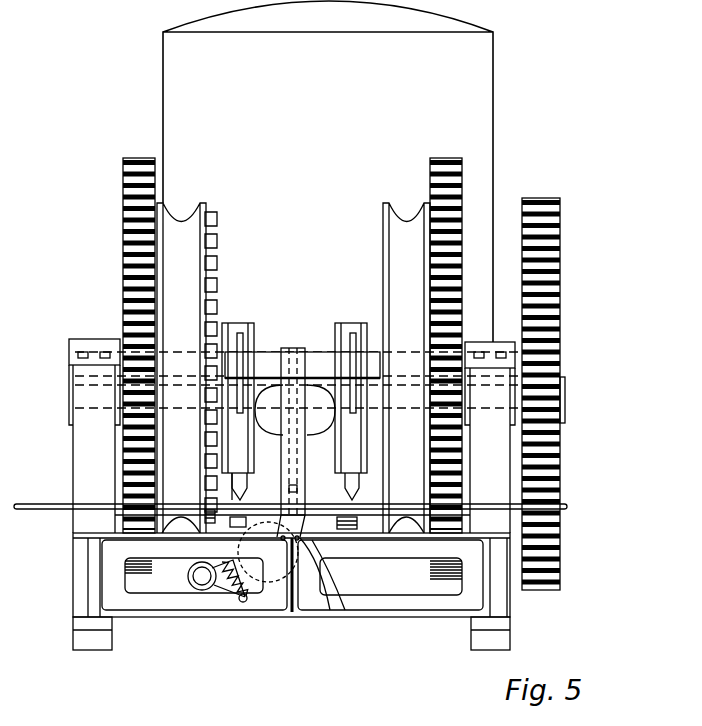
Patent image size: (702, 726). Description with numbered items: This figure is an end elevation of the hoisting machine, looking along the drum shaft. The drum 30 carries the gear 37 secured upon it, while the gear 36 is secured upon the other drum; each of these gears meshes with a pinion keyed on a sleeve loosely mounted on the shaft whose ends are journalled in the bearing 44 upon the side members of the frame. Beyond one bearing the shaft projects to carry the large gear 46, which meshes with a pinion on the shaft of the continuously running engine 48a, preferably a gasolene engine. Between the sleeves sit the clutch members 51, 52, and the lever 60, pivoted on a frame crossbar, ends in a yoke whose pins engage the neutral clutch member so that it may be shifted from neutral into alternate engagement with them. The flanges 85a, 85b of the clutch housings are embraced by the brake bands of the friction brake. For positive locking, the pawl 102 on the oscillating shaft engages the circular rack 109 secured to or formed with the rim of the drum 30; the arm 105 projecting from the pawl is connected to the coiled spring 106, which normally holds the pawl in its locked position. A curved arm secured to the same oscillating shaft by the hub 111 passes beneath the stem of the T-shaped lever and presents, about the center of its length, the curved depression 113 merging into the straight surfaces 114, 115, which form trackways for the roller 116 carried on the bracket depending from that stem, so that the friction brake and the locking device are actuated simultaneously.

The drum 30 is at (178, 222).
The gear 36 is at (468, 173).
The gear 37 is at (140, 160).
The bearing 44 is at (243, 498).
The large gear 46 is at (545, 215).
The continuously running engine 48a is at (480, 107).
The clutch member 51 is at (268, 388).
The clutch member 52 is at (310, 393).
The lever 60 is at (297, 474).
The flange of the clutch housing 85a is at (346, 327).
The flange of the clutch housing 85b is at (238, 327).
The pawl 102 is at (212, 525).
The arm 105 is at (220, 595).
The coiled spring 106 is at (248, 600).
The circular rack 109 is at (212, 257).
The hub 111 is at (200, 592).
The curved depression 113 is at (300, 540).
The straight surface 114 is at (288, 545).
The straight surface 115 is at (328, 517).
The roller 116 is at (330, 540).